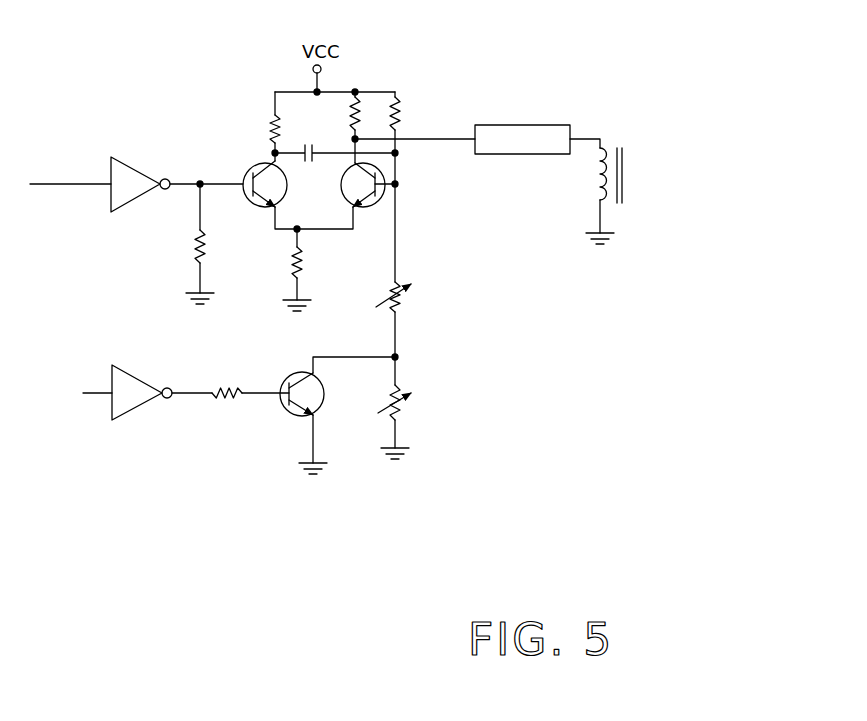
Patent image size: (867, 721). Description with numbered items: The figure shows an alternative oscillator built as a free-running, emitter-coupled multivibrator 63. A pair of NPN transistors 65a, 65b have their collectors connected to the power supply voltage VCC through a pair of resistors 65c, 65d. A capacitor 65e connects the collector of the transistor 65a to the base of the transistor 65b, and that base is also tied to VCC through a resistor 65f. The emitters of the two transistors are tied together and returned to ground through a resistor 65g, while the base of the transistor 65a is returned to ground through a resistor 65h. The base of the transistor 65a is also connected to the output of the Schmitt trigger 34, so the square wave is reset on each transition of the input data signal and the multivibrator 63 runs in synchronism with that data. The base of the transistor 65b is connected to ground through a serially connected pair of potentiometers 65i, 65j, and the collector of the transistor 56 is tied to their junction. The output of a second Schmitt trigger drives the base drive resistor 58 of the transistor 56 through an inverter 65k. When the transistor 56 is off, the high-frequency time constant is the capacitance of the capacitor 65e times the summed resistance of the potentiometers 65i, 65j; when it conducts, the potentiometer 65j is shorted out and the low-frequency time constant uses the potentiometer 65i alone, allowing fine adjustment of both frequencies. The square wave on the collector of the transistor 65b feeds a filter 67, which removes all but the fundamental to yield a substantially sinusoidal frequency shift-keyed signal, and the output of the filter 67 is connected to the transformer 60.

The Schmitt trigger 34 is at (137, 168).
The transistor 56 is at (299, 373).
The base drive resistor 58 is at (228, 399).
The transformer 60 is at (618, 148).
The free-running multivibrator 63 is at (410, 65).
The NPN transistor 65a is at (244, 176).
The NPN transistor 65b is at (388, 178).
The resistor 65c is at (272, 120).
The resistor 65d is at (357, 115).
The capacitor 65e is at (307, 145).
The resistor 65f is at (401, 112).
The resistor 65g is at (301, 262).
The resistor 65h is at (205, 248).
The potentiometer 65i is at (414, 283).
The potentiometer 65j is at (413, 408).
The inverter 65k is at (147, 402).
The filter 67 is at (527, 155).